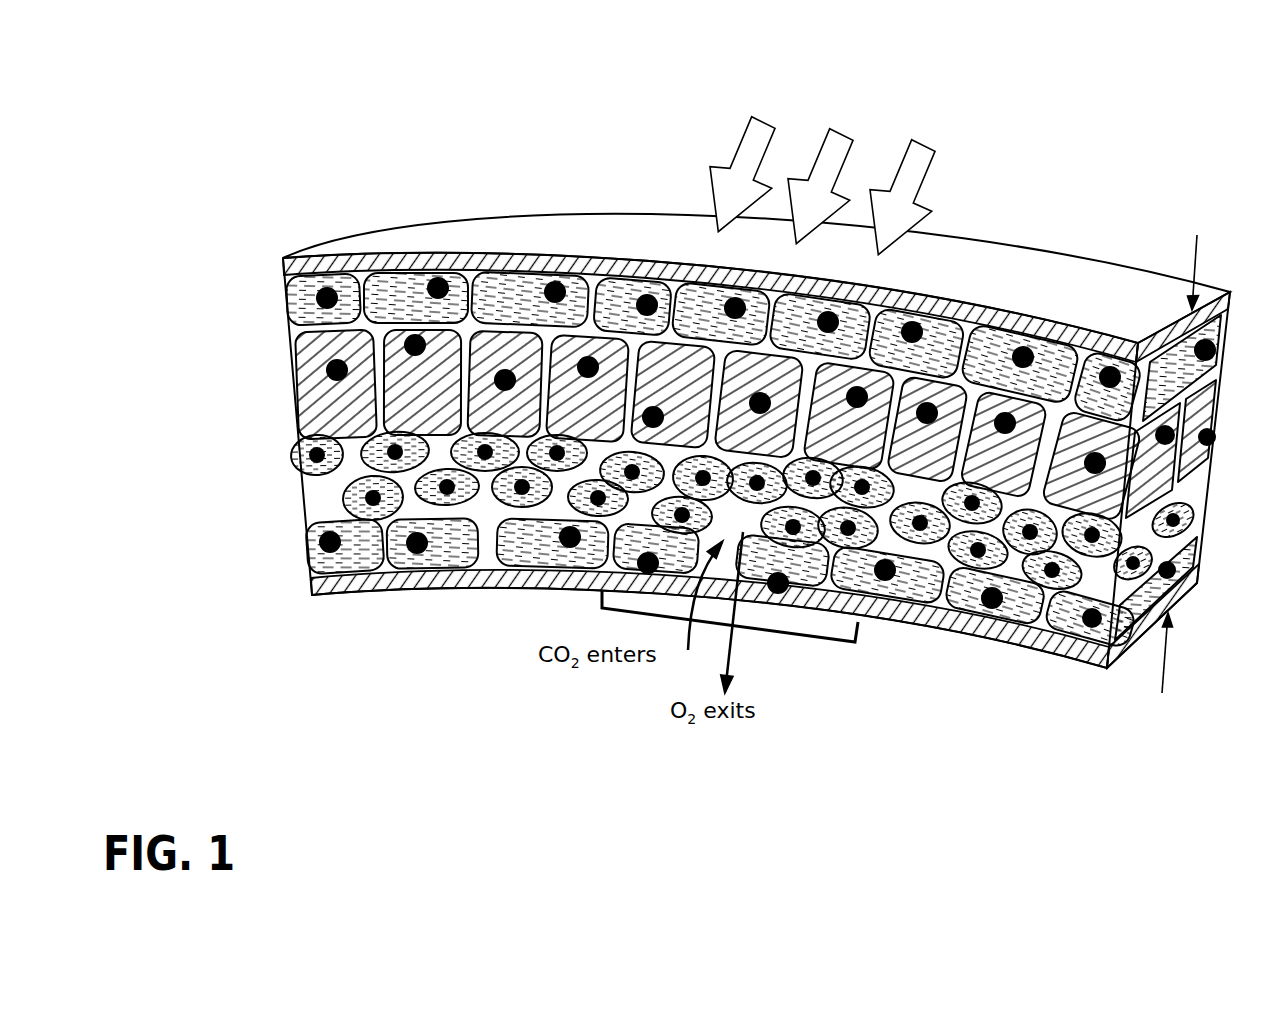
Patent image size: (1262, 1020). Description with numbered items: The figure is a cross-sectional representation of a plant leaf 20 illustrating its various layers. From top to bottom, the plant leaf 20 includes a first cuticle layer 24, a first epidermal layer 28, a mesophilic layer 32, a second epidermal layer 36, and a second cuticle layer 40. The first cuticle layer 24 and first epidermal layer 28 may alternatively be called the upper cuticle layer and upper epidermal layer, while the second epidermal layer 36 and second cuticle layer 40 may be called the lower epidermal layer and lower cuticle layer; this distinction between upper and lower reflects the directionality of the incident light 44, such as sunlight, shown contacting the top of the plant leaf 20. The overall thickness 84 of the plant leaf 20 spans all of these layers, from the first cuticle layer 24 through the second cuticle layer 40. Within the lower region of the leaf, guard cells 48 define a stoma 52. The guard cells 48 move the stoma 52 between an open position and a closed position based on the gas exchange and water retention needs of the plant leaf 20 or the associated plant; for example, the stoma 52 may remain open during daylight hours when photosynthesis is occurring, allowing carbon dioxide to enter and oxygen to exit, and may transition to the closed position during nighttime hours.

The plant leaf 20 is at (252, 152).
The first cuticle layer 24 is at (437, 232).
The first epidermal layer 28 is at (280, 277).
The mesophilic layer 32 is at (290, 510).
The second epidermal layer 36 is at (302, 523).
The second cuticle layer 40 is at (348, 585).
The incident light 44 is at (762, 120).
The guard cells 48 is at (603, 582).
The stoma 52 is at (767, 630).
The thickness 84 is at (1192, 247).